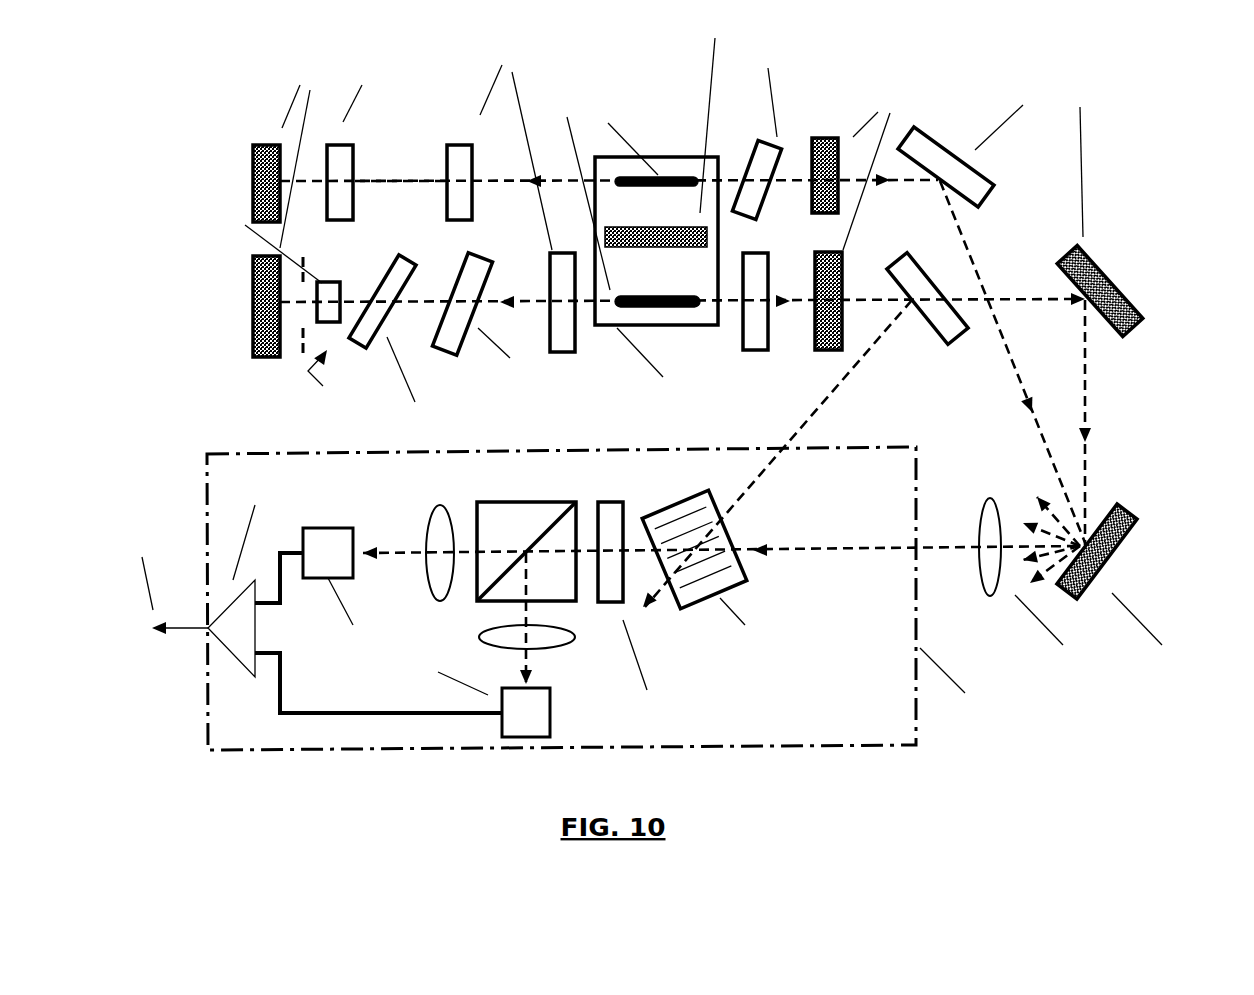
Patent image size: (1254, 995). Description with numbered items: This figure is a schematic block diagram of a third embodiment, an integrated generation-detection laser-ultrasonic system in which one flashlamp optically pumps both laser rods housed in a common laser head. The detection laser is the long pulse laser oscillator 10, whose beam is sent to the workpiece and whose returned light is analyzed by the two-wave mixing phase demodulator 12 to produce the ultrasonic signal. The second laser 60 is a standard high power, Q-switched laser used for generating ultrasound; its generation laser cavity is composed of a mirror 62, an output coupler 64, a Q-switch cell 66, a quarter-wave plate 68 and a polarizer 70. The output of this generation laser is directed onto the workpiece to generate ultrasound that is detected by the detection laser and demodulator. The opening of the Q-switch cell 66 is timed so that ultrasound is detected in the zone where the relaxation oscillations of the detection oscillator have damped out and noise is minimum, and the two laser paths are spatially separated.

The long pulse laser oscillator 10 is at (643, 304).
The two-wave mixing phase demodulator 12 is at (510, 748).
The second laser 60 is at (404, 150).
The mirror 62 is at (253, 182).
The output coupler 64 is at (833, 140).
The Q-switch cell 66 is at (340, 157).
The quarter-wave plate 68 is at (447, 218).
The polarizer 70 is at (763, 155).